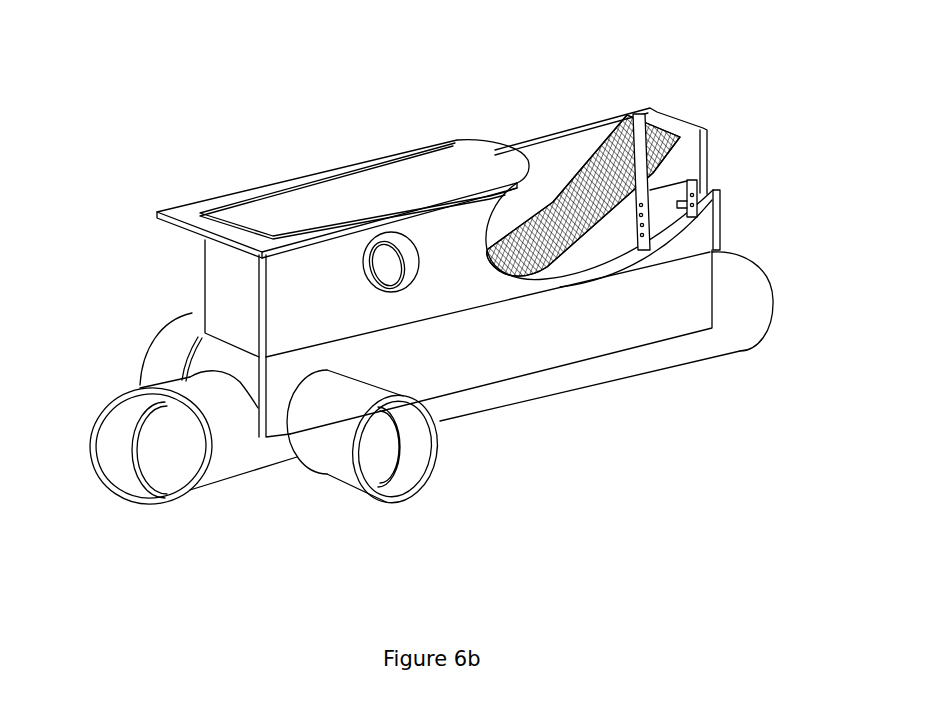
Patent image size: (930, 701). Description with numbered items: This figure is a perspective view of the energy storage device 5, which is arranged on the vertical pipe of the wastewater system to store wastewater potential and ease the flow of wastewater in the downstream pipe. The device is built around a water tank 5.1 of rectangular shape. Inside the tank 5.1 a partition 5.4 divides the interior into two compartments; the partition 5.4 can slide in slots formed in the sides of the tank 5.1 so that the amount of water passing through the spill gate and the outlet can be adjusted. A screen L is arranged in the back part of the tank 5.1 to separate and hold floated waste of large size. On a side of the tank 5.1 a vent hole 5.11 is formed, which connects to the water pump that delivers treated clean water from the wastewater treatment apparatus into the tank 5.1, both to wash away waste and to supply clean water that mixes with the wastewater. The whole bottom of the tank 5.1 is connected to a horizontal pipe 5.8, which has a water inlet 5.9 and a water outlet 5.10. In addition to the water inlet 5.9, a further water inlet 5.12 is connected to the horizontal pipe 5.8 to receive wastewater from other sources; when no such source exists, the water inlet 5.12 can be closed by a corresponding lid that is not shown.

The energy storage device 5 is at (443, 285).
The water tank 5.1 is at (237, 275).
The partition 5.4 is at (697, 190).
The horizontal pipe 5.8 is at (567, 377).
The water inlet 5.9 is at (142, 485).
The water outlet 5.10 is at (750, 288).
The vent hole 5.11 is at (393, 254).
The water inlet 5.12 is at (410, 433).
The screen L is at (645, 135).